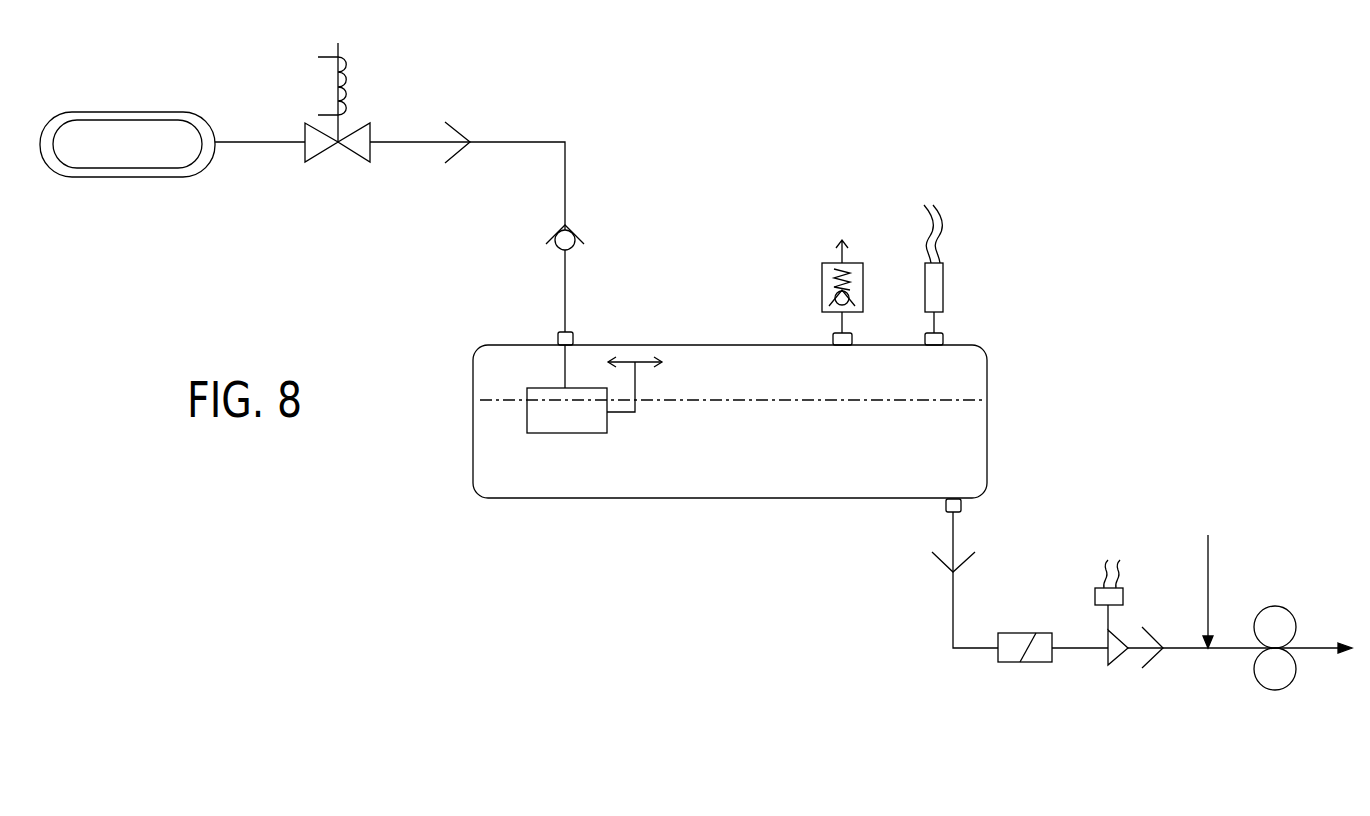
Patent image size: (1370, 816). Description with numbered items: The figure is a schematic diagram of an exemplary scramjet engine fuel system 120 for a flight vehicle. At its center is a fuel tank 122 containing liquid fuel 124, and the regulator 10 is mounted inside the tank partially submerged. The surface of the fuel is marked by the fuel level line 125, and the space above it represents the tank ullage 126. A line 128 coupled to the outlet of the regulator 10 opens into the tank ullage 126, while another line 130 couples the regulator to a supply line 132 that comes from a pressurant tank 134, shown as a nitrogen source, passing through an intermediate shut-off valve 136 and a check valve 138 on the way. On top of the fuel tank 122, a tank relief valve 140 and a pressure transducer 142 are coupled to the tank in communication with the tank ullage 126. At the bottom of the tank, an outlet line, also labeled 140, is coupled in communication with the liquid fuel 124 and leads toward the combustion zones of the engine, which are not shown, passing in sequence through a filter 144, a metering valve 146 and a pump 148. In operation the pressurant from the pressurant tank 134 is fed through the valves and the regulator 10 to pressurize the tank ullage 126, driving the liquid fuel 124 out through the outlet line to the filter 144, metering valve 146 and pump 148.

The regulator 10 is at (565, 434).
The scramjet engine fuel system 120 is at (830, 150).
The fuel tank 122 is at (987, 420).
The liquid fuel 124 is at (827, 461).
The fuel level line 125 is at (865, 398).
The tank ullage 126 is at (827, 384).
The line 128 is at (638, 386).
The line 130 is at (563, 367).
The supply line 132 is at (567, 292).
The pressurant tank 134 is at (130, 177).
The shut-off valve 136 is at (352, 153).
The check valve 138 is at (577, 233).
The tank relief valve 140 is at (822, 302).
The pressure transducer 142 is at (943, 285).
The filter 144 is at (1027, 662).
The metering valve 146 is at (1120, 666).
The pump 148 is at (1259, 688).